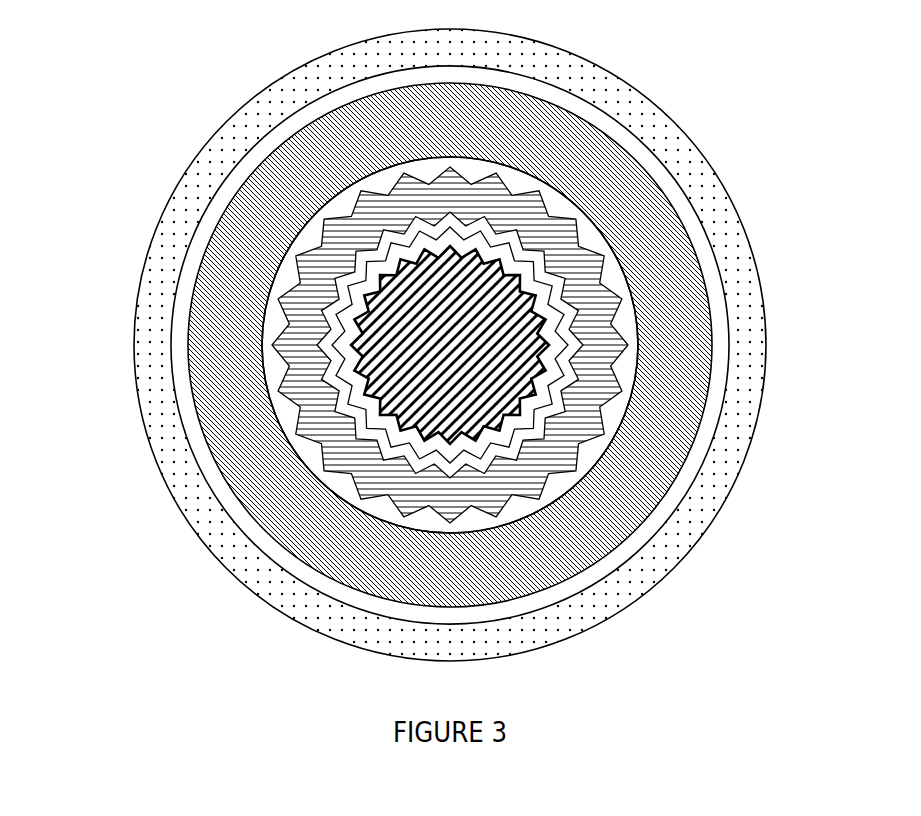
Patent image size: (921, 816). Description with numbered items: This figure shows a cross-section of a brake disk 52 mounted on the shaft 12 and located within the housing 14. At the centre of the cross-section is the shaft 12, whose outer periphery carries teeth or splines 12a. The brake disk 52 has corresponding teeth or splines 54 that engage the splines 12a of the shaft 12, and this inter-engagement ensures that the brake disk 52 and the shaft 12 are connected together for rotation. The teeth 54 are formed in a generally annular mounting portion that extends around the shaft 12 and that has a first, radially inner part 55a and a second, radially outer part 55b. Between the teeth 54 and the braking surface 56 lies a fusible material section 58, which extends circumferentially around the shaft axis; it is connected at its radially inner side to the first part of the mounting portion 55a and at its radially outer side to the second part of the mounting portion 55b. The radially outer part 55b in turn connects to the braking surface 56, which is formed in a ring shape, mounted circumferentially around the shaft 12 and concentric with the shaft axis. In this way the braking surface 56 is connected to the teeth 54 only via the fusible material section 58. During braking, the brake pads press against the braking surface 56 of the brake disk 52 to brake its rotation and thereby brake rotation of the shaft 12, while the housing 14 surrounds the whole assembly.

The shaft 12 is at (299, 451).
The teeth or splines of the shaft 12a is at (375, 372).
The housing 14 is at (157, 413).
The brake disk 52 is at (545, 345).
The teeth or splines of the brake disk 54 is at (465, 424).
The first part of the mounting portion 55a is at (610, 425).
The second part of the mounting portion 55b is at (627, 357).
The braking surface 56 is at (673, 385).
The fusible material section 58 is at (592, 473).